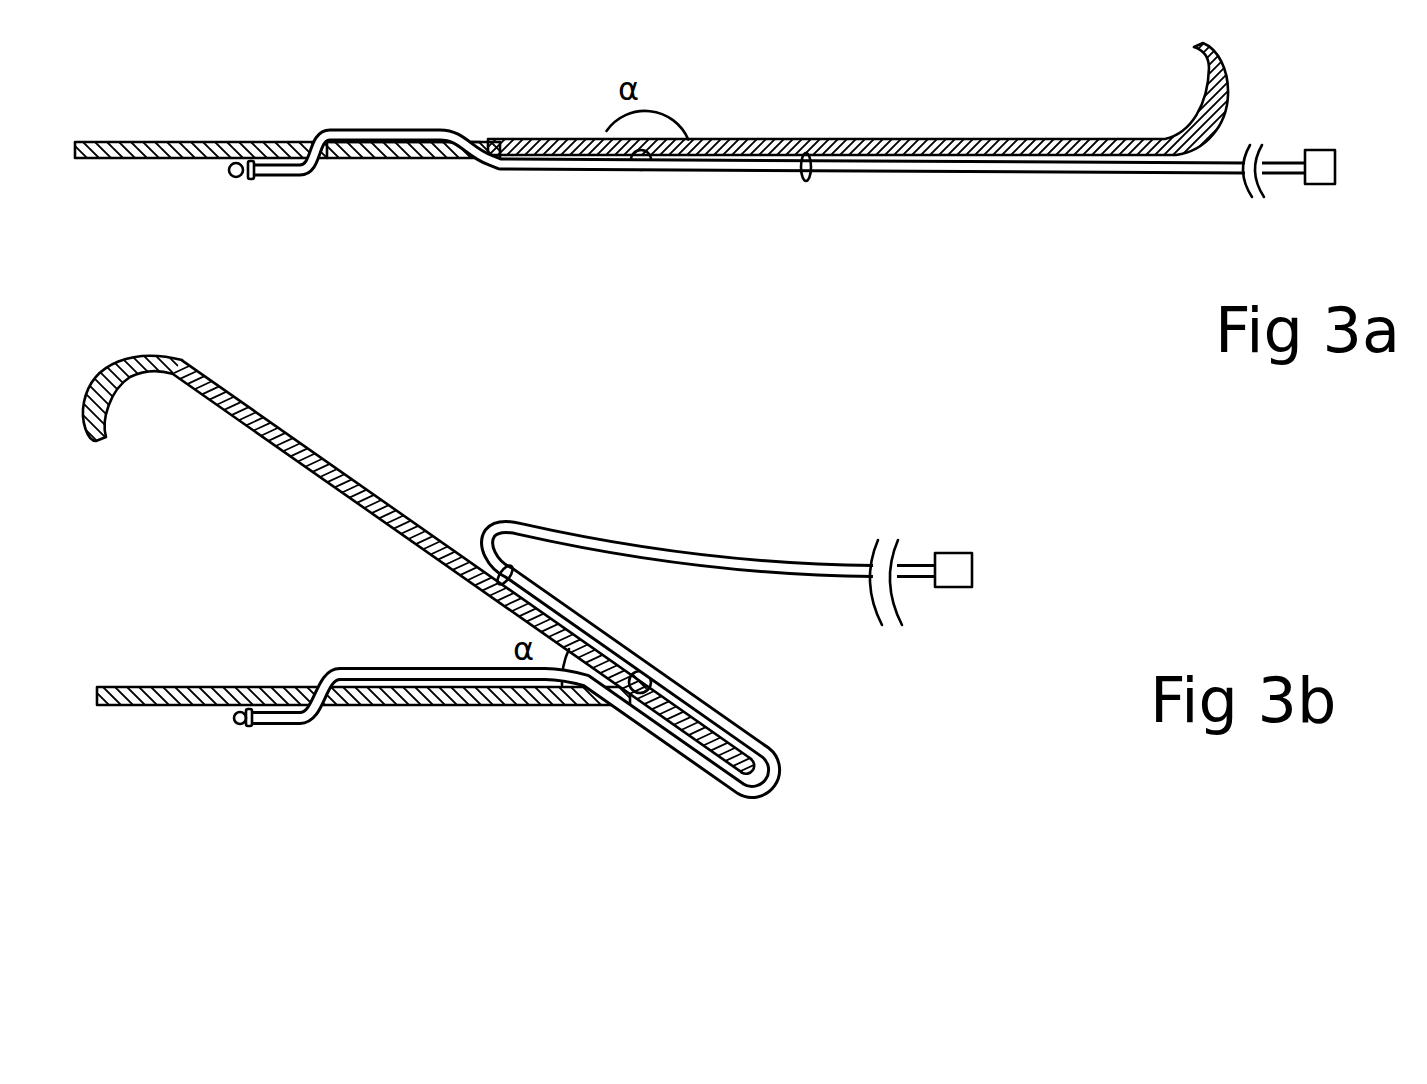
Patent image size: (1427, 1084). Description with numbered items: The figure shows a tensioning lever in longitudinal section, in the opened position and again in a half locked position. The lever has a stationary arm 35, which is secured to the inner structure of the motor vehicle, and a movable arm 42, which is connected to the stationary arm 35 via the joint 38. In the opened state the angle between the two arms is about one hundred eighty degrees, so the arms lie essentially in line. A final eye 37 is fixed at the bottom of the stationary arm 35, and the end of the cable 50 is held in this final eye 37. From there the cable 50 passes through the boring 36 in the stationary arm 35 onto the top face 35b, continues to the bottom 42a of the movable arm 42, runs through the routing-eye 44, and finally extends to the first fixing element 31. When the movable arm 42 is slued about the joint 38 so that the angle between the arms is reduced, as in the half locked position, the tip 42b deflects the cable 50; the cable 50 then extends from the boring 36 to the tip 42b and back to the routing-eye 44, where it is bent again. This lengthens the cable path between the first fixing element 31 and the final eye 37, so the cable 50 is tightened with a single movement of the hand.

In FIG. 3A, the first fixing element 31 is at (1335, 165).
In FIG. 3B, the first fixing element 31 is at (960, 568).
In FIG. 3A, the stationary arm 35 is at (147, 152).
In FIG. 3B, the stationary arm 35 is at (137, 692).
In FIG. 3A, the top face of the stationary arm 35b is at (365, 134).
In FIG. 3A, the boring 36 is at (318, 139).
In FIG. 3A, the final eye 37 is at (253, 182).
In FIG. 3B, the final eye 37 is at (250, 727).
In FIG. 3A, the joint 38 is at (640, 150).
In FIG. 3B, the joint 38 is at (640, 682).
In FIG. 3A, the movable arm 42 is at (848, 145).
In FIG. 3A, the bottom of the movable arm 42a is at (735, 172).
In FIG. 3B, the bottom of the movable arm 42a is at (410, 508).
In FIG. 3B, the tip of the movable arm 42b is at (776, 792).
In FIG. 3A, the routing-eye 44 is at (810, 176).
In FIG. 3B, the routing-eye 44 is at (519, 572).
In FIG. 3A, the cable 50 is at (380, 132).
In FIG. 3B, the cable 50 is at (755, 562).